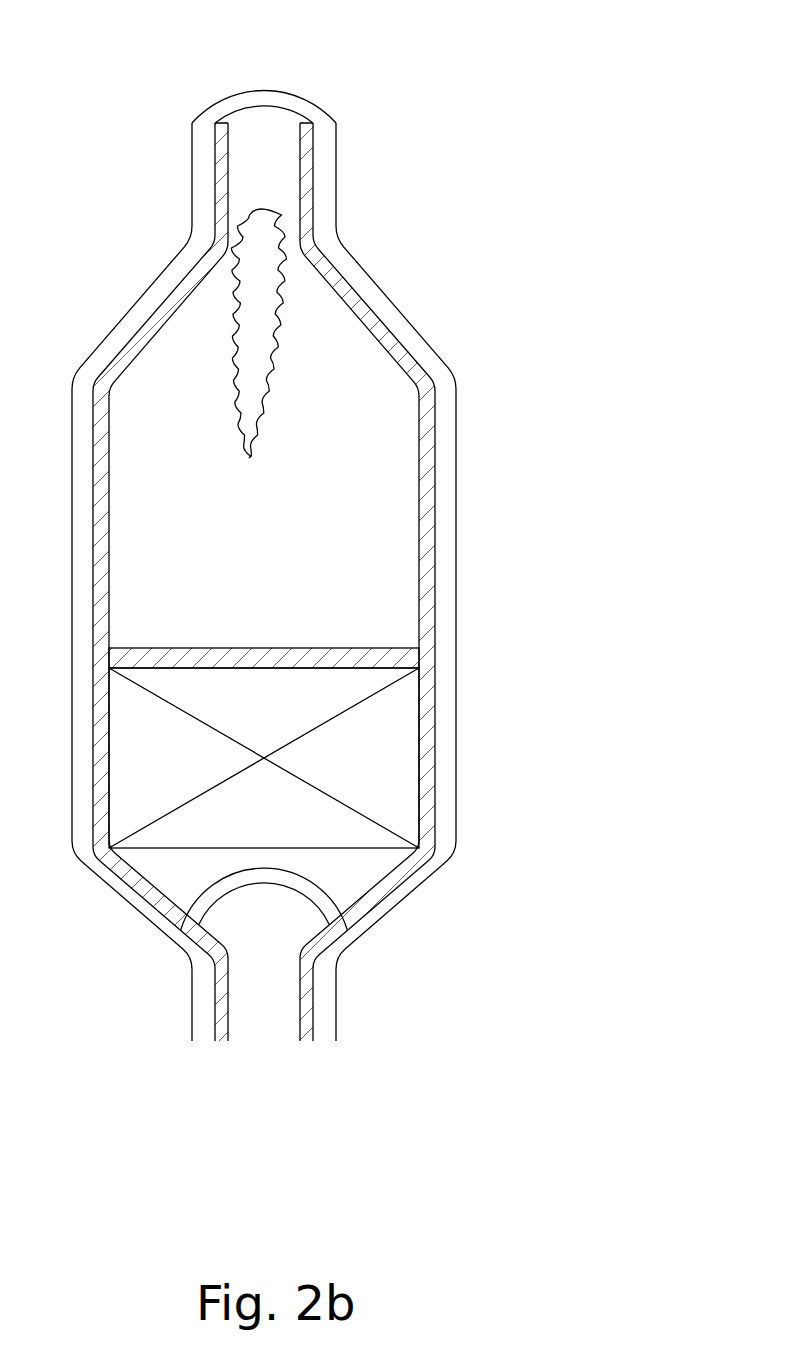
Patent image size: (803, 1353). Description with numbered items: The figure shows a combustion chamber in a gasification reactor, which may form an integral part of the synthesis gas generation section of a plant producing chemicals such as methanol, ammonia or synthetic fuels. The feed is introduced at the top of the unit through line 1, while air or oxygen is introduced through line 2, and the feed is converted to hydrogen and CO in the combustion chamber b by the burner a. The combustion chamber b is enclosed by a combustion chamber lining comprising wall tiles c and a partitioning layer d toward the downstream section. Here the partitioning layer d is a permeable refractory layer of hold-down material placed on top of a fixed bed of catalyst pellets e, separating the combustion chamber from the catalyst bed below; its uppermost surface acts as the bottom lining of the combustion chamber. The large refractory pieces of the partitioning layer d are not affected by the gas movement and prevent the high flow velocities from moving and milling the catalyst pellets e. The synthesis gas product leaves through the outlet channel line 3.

The line 1 is at (191, 177).
The line 2 is at (262, 90).
The outlet channel line 3 is at (264, 975).
The burner a is at (258, 223).
The combustion chamber b is at (253, 462).
The wall tiles c is at (428, 538).
The partitioning layer d is at (348, 657).
The fixed bed of catalyst pellets e is at (357, 758).